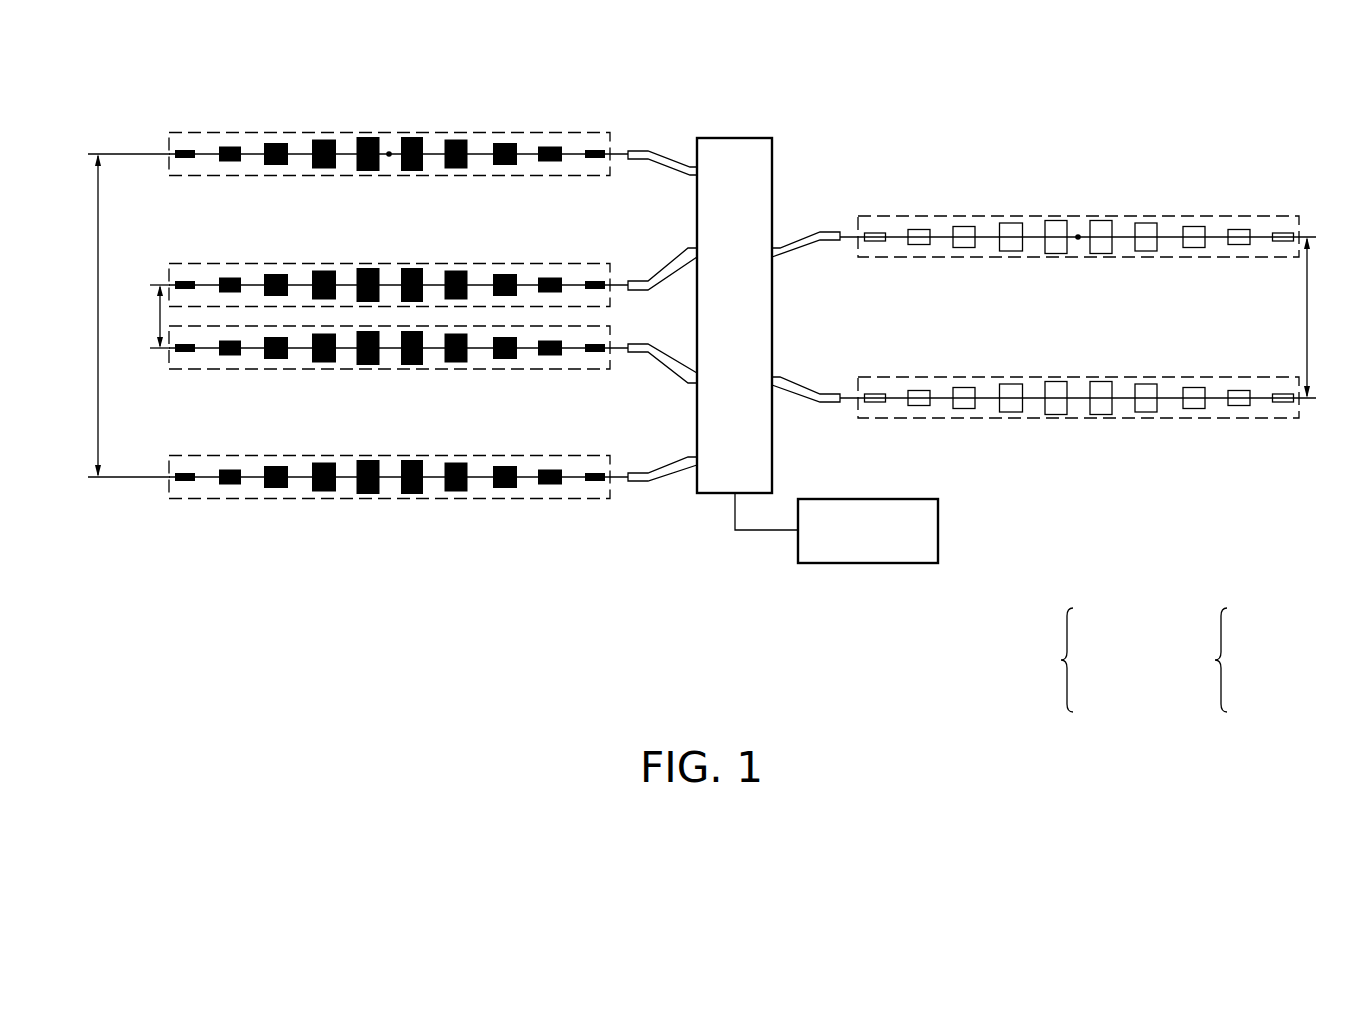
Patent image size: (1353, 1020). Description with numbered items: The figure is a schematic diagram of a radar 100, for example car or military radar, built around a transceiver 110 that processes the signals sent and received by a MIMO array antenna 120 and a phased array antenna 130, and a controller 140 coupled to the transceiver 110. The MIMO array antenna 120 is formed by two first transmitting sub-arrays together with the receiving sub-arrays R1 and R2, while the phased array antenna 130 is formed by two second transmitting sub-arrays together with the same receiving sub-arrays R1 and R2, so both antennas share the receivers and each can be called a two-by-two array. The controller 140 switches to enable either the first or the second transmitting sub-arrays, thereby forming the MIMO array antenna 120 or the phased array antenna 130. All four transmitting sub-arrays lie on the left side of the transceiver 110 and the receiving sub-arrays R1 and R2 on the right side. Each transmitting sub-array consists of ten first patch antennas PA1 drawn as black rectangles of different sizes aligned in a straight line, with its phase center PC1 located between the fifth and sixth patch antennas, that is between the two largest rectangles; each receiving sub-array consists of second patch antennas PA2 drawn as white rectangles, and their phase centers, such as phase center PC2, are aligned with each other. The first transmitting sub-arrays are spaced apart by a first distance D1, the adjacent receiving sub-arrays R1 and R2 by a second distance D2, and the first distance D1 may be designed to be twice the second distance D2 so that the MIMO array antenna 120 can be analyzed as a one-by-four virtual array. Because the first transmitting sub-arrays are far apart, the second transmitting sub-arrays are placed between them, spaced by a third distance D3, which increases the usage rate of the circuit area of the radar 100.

The radar 100 is at (975, 636).
The transceiver 110 is at (708, 494).
The MIMO array antenna 120 is at (1074, 660).
The phased array antenna 130 is at (1224, 660).
The controller 140 is at (938, 531).
The receiving sub-array R1 is at (1272, 216).
The receiving sub-array R2 is at (1272, 419).
The first patch antennas PA1 is at (595, 158).
The second patch antennas PA2 is at (1283, 233).
The phase center PC1 is at (389, 152).
The phase center PC2 is at (1078, 239).
The first distance D1 is at (120, 315).
The second distance D2 is at (1319, 317).
The third distance D3 is at (149, 316).